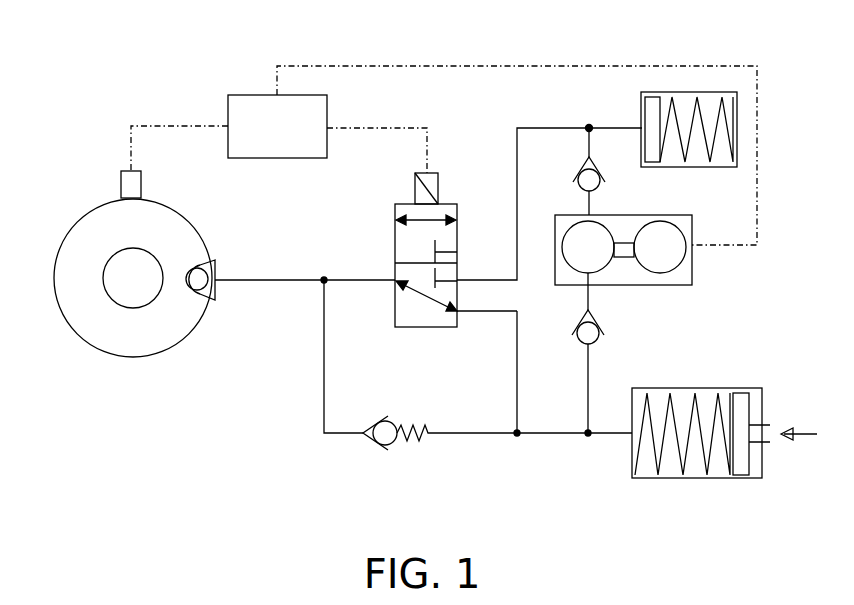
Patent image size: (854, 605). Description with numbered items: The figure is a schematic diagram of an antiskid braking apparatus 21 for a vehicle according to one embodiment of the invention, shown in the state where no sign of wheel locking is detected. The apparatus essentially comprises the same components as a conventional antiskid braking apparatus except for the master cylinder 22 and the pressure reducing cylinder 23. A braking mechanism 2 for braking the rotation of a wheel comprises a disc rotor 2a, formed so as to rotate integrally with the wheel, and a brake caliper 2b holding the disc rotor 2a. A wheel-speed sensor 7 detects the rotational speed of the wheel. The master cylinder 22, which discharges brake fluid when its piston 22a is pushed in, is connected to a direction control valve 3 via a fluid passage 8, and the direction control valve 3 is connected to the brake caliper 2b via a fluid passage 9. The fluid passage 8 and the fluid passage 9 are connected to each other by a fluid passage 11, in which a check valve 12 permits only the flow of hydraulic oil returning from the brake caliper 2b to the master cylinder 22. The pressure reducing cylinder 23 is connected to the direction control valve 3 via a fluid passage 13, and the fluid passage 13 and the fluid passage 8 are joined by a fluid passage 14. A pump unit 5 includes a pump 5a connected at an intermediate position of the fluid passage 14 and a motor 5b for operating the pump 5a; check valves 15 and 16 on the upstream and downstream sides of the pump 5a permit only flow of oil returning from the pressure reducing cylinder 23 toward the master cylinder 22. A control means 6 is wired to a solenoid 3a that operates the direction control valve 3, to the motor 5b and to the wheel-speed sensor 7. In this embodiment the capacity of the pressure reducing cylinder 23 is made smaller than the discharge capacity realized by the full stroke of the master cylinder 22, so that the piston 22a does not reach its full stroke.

The antiskid braking apparatus 21 is at (163, 104).
The braking mechanism 2 is at (134, 328).
The disc rotor 2a is at (117, 353).
The brake caliper 2b is at (195, 341).
The wheel-speed sensor 7 is at (141, 181).
The control means 6 is at (277, 126).
The direction control valve 3 is at (399, 243).
The solenoid 3a is at (415, 190).
The fluid passage 9 is at (273, 282).
The fluid passage 11 is at (323, 378).
The check valve 12 is at (387, 458).
The fluid passage 8 is at (517, 413).
The fluid passage 13 is at (517, 152).
The fluid passage 14 is at (588, 143).
The check valve 15 is at (608, 192).
The pump unit 5 is at (626, 252).
The pump 5a is at (567, 270).
The motor 5b is at (679, 271).
The check valve 16 is at (608, 348).
The master cylinder 22 is at (724, 468).
The piston 22a is at (742, 479).
The pressure reducing cylinder 23 is at (641, 107).